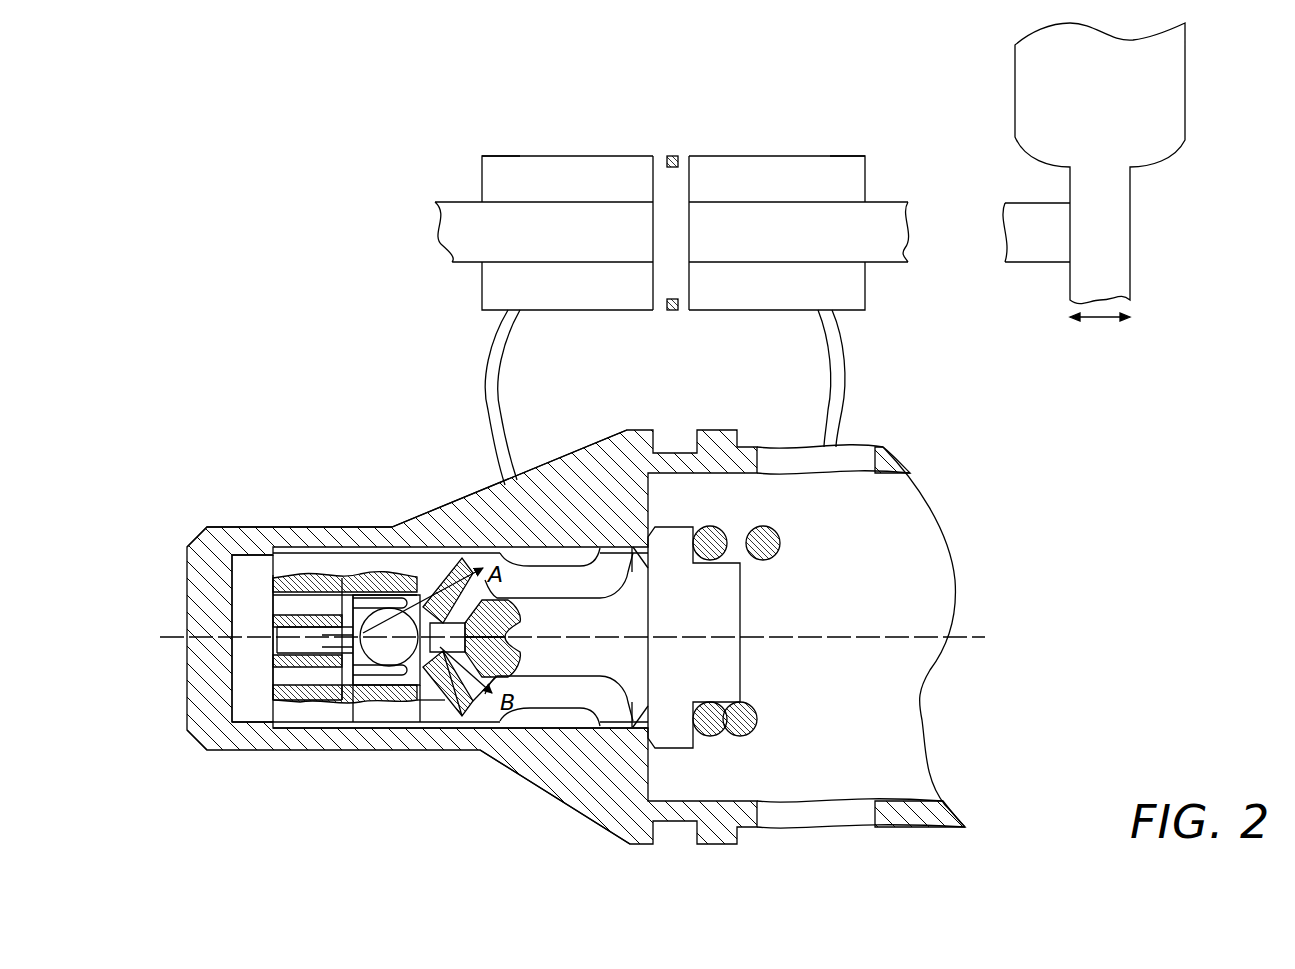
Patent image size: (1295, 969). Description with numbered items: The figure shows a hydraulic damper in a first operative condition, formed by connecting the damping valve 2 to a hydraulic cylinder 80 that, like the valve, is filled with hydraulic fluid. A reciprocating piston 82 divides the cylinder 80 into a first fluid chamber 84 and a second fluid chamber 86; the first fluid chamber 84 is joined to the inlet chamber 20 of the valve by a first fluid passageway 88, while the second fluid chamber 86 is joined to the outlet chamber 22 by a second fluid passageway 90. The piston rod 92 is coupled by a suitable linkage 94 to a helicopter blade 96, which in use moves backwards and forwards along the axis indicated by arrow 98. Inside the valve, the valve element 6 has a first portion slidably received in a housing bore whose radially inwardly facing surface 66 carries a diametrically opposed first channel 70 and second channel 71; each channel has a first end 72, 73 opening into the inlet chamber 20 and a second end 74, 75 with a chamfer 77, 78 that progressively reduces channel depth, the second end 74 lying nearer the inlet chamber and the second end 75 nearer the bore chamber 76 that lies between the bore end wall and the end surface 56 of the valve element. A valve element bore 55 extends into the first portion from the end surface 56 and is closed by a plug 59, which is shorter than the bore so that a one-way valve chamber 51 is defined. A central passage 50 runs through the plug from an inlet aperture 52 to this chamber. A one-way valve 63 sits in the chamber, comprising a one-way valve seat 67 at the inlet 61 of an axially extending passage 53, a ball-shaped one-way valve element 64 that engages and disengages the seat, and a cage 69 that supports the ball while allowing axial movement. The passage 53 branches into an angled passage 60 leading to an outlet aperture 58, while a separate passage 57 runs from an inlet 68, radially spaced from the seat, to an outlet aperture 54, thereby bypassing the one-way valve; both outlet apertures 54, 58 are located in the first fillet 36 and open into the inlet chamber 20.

The damping valve 2 is at (232, 425).
The valve element 6 is at (232, 548).
The inlet chamber 20 is at (603, 700).
The outlet chamber 22 is at (835, 755).
The first fillet 36 is at (488, 730).
The central passage 50 is at (262, 722).
The one-way valve chamber 51 is at (380, 612).
The inlet aperture 52 is at (280, 637).
The axially extending passage 53 is at (420, 700).
The outlet aperture 54 is at (486, 590).
The valve element bore 55 is at (262, 593).
The end surface 56 is at (290, 665).
The passage 57 is at (445, 585).
The outlet aperture 58 is at (490, 686).
The plug 59 is at (283, 612).
The angled passage 60 is at (470, 637).
The inlet 61 is at (380, 698).
The one-way valve 63 is at (355, 615).
The one-way valve element 64 is at (322, 598).
The radially inwardly facing surface 66 is at (360, 726).
The one-way valve seat 67 is at (385, 700).
The inlet 68 is at (430, 600).
The cage 69 is at (345, 612).
The first channel 70 is at (370, 576).
The second channel 71 is at (410, 722).
The first end 72 is at (470, 560).
The first end 73 is at (455, 715).
The second end 74 is at (262, 560).
The second end 75 is at (290, 724).
The bore chamber 76 is at (240, 712).
The chamfer 77 is at (305, 578).
The chamfer 78 is at (322, 728).
The hydraulic cylinder 80 is at (588, 156).
The piston 82 is at (680, 182).
The first fluid chamber 84 is at (503, 156).
The second fluid chamber 86 is at (821, 156).
The first fluid passageway 88 is at (495, 385).
The second fluid passageway 90 is at (840, 380).
The piston rod 92 is at (893, 207).
The linkage 94 is at (1027, 262).
The helicopter blade 96 is at (1128, 224).
The arrow 98 is at (1100, 329).